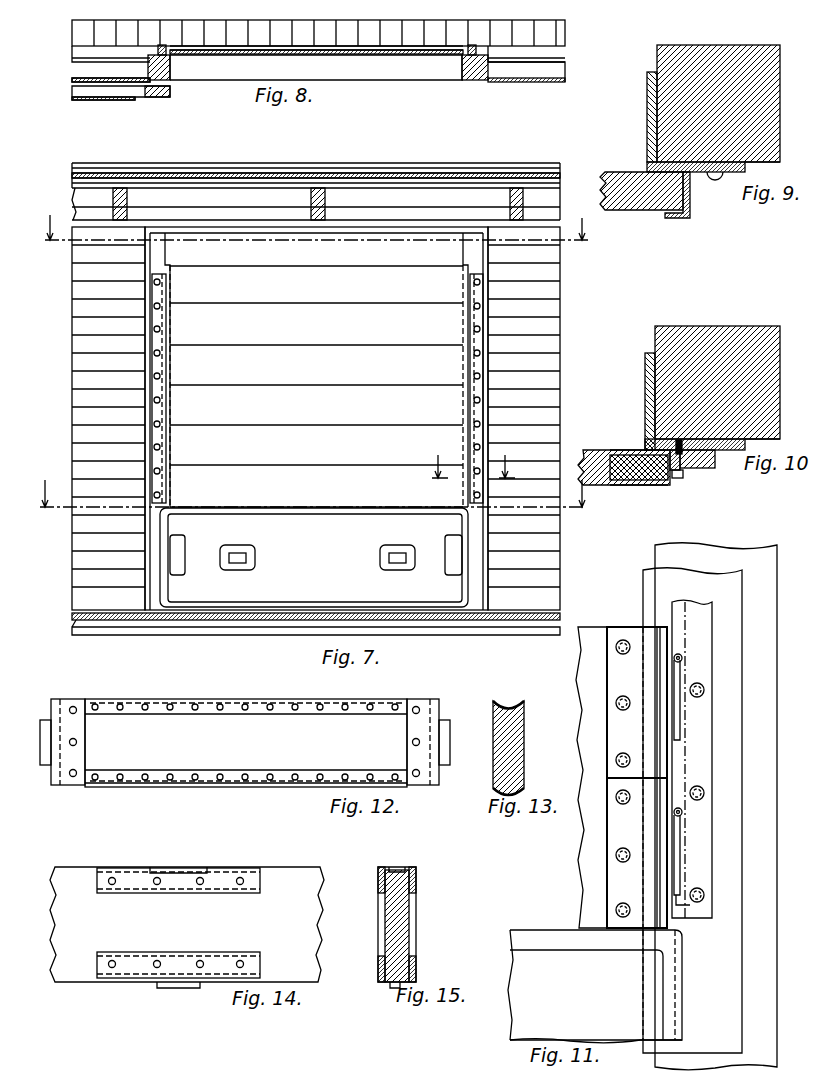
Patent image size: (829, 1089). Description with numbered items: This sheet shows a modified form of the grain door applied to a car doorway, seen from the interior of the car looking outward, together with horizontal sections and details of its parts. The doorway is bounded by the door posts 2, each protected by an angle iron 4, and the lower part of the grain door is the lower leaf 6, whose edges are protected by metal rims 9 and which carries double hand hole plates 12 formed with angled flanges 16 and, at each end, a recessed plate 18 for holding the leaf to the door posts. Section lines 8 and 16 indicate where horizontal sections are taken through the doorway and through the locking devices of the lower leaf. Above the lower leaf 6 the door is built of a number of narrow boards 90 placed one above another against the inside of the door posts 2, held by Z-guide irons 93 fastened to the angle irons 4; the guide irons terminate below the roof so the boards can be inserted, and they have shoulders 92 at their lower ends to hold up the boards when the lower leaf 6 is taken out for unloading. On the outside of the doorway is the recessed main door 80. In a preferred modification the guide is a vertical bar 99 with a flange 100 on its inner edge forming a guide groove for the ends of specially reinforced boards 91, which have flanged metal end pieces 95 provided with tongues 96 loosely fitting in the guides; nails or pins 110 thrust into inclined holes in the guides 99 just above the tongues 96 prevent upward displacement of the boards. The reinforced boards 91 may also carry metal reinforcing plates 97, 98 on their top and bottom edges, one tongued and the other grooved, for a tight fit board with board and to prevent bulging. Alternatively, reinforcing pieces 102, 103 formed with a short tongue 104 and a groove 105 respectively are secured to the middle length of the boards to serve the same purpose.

In FIG. 8, the door post 2 is at (150, 62).
In FIG. 9, the door post 2 is at (713, 112).
In FIG. 10, the door post 2 is at (712, 388).
In FIG. 8, the angle iron 4 is at (173, 68).
In FIG. 9, the angle iron 4 is at (645, 108).
In FIG. 10, the angle iron 4 is at (643, 369).
In FIG. 7, the angle iron 4 is at (172, 244).
In FIG. 7, the lower leaf 6 is at (314, 557).
In FIG. 11, the lower leaf 6 is at (595, 986).
In FIG. 7, the section line 8 8 is at (314, 224).
In FIG. 7, the metal rim 9 is at (288, 607).
In FIG. 7, the double hand hole plate 12 is at (237, 570).
In FIG. 7, the angled flange 16 is at (312, 503).
In FIG. 7, the recessed plate 18 is at (182, 577).
In FIG. 8, the recessed main door 80 is at (100, 96).
In FIG. 8, the board 90 is at (397, 52).
In FIG. 9, the board 90 is at (630, 203).
In FIG. 7, the board 90 is at (316, 386).
In FIG. 10, the reinforced board 91 is at (592, 456).
In FIG. 12, the reinforced board 91 is at (152, 730).
In FIG. 13, the reinforced board 91 is at (508, 742).
In FIG. 14, the reinforced board 91 is at (308, 906).
In FIG. 11, the reinforced board 91 is at (585, 750).
In FIG. 11, the shoulder 92 is at (683, 908).
In FIG. 8, the Z-guide iron 93 is at (165, 47).
In FIG. 9, the Z-guide iron 93 is at (694, 213).
In FIG. 7, the Z-guide iron 93 is at (152, 300).
In FIG. 10, the end piece 95 is at (638, 486).
In FIG. 12, the end piece 95 is at (66, 786).
In FIG. 11, the end piece 95 is at (620, 668).
In FIG. 10, the tongue 96 is at (668, 450).
In FIG. 12, the tongue 96 is at (447, 720).
In FIG. 11, the tongue 96 is at (680, 740).
In FIG. 12, the top reinforcing plate 97 is at (234, 700).
In FIG. 13, the top reinforcing plate 97 is at (521, 703).
In FIG. 12, the bottom reinforcing plate 98 is at (226, 788).
In FIG. 13, the bottom reinforcing plate 98 is at (495, 788).
In FIG. 10, the vertical bar 99 is at (712, 468).
In FIG. 11, the vertical bar 99 is at (702, 618).
In FIG. 10, the flange 100 is at (680, 478).
In FIG. 14, the reinforcing piece 102 is at (226, 957).
In FIG. 15, the reinforcing piece 102 is at (418, 964).
In FIG. 14, the reinforcing piece 103 is at (135, 885).
In FIG. 15, the reinforcing piece 103 is at (418, 885).
In FIG. 14, the short tongue 104 is at (165, 986).
In FIG. 15, the short tongue 104 is at (393, 988).
In FIG. 14, the groove 105 is at (180, 867).
In FIG. 15, the groove 105 is at (397, 866).
In FIG. 10, the nail or pin 110 is at (684, 422).
In FIG. 11, the nail or pin 110 is at (683, 658).